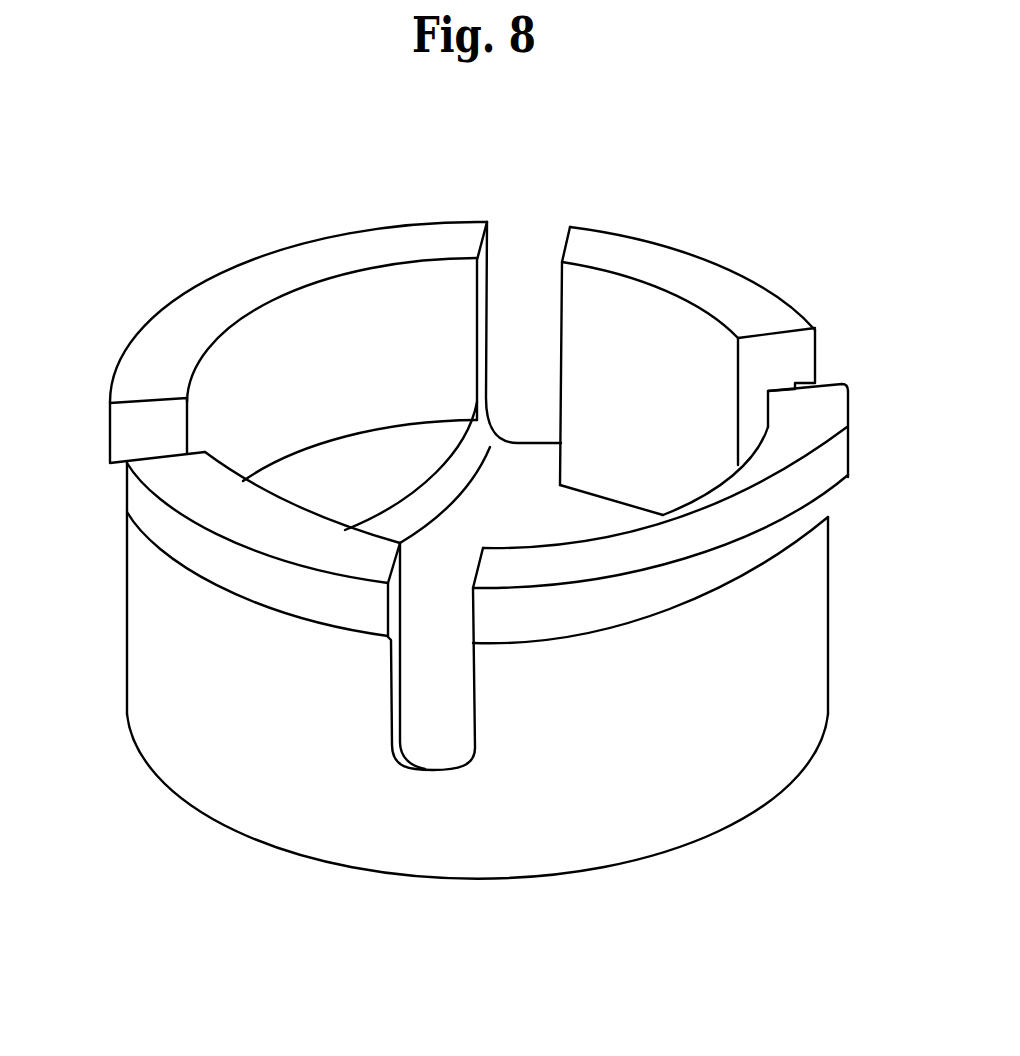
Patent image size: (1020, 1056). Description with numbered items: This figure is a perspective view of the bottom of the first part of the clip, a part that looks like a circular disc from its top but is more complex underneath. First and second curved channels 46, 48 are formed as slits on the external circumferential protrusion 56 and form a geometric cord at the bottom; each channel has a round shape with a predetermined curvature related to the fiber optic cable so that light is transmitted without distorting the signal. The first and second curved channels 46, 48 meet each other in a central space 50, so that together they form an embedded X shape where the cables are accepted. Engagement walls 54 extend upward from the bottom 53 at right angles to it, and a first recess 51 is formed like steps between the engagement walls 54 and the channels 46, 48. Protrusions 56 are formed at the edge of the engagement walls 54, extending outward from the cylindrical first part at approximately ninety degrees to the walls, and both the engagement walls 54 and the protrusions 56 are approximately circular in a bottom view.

The first curved channel 46 is at (818, 355).
The second curved channel 48 is at (513, 238).
The central space 50 is at (524, 520).
The first recess 51 is at (388, 484).
The bottom 53 is at (740, 824).
The engagement walls 54 is at (830, 586).
The protrusions 56 is at (848, 477).